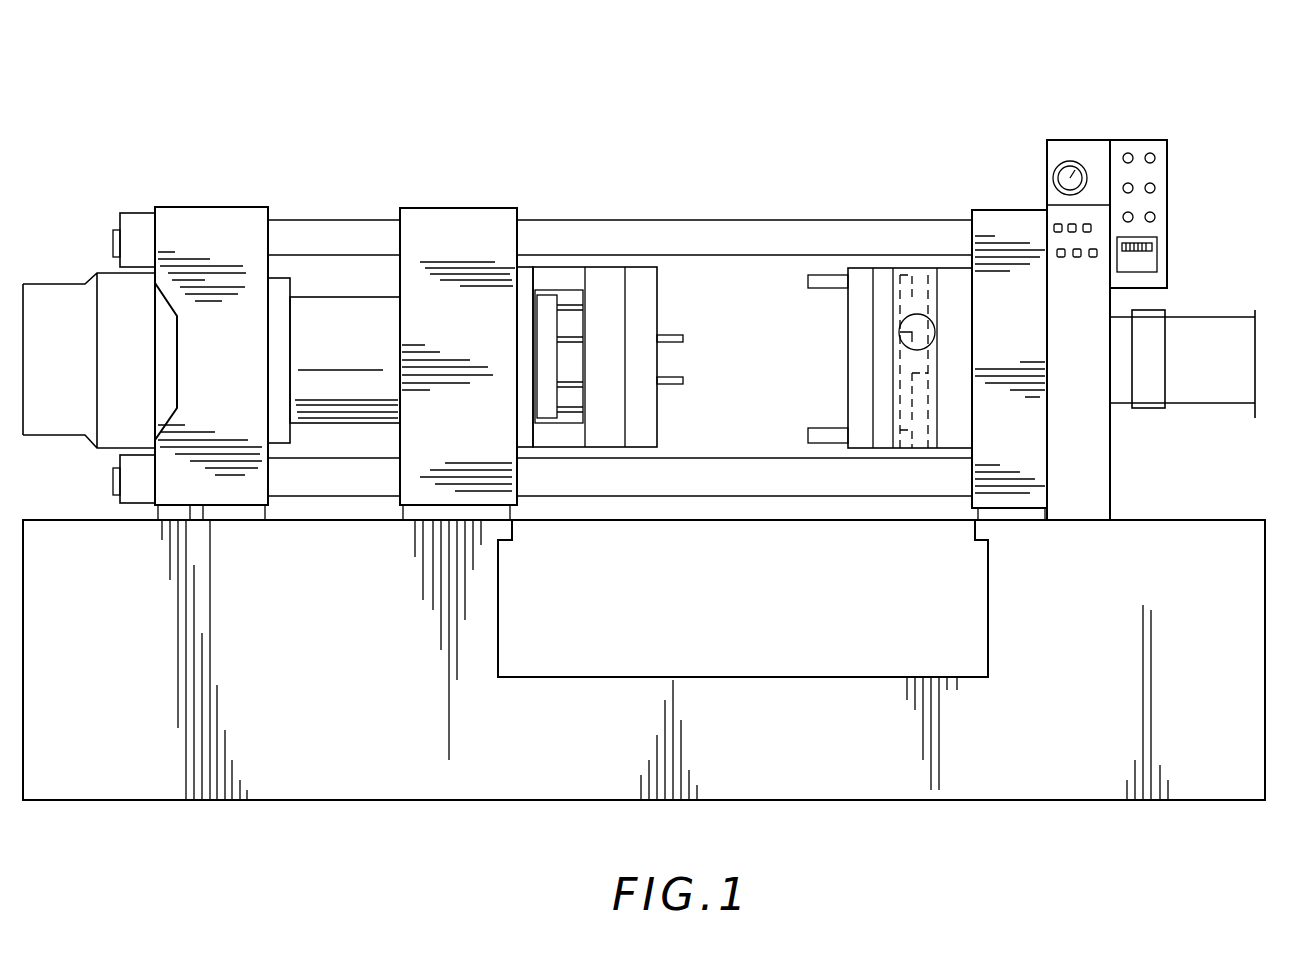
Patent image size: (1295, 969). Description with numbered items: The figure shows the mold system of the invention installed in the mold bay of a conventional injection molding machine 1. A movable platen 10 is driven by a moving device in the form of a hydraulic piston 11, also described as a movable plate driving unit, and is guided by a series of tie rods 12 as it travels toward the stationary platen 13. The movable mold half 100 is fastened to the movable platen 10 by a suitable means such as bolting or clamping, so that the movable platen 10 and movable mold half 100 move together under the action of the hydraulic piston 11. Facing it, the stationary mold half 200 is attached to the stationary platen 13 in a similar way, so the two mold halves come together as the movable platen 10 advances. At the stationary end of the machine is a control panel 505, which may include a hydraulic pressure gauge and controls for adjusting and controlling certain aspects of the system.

The injection molding machine 1 is at (103, 190).
The movable platen 10 is at (480, 252).
The hydraulic piston 11 is at (345, 318).
The tie rods 12 is at (603, 230).
The stationary platen 13 is at (1008, 235).
The movable mold half 100 is at (608, 288).
The stationary mold half 200 is at (960, 320).
The control panel 505 is at (1137, 150).